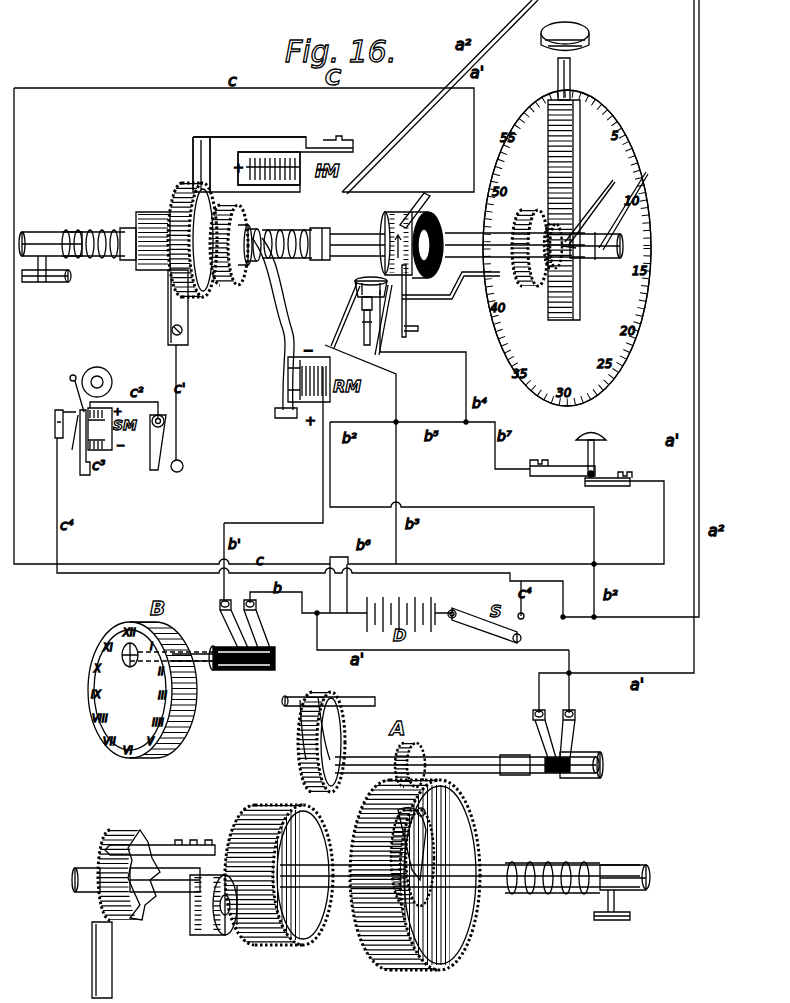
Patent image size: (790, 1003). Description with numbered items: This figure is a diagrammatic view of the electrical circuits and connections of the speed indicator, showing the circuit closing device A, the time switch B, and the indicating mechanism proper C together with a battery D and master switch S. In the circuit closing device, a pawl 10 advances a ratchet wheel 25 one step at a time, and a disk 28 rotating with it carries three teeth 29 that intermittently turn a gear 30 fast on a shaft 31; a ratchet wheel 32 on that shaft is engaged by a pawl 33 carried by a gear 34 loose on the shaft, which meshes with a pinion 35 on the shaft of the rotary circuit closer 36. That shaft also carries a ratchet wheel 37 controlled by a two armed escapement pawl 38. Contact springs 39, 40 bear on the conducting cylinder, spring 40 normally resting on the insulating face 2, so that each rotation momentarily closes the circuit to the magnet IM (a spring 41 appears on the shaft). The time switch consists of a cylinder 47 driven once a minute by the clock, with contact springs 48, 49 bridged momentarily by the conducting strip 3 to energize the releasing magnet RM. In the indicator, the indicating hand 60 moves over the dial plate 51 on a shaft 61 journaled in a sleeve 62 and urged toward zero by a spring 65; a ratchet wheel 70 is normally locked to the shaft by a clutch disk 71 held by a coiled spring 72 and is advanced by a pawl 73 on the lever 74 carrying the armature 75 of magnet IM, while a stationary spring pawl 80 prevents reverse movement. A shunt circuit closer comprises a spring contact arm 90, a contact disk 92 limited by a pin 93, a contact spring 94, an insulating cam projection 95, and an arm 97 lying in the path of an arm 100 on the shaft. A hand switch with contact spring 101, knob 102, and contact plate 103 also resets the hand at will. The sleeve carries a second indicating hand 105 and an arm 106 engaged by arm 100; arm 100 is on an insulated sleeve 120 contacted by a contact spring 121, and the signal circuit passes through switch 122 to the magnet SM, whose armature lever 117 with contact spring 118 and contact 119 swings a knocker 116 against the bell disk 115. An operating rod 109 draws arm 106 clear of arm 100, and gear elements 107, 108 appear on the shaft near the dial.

The insulating material 2 is at (553, 780).
The strip of conducting material 3 is at (277, 660).
The pawl 10 is at (92, 970).
The ratchet wheel 25 is at (96, 882).
The disk or wheel 28 is at (215, 932).
The teeth 29 is at (238, 930).
The gear 30 is at (258, 808).
The shaft 31 is at (634, 872).
The ratchet wheel 32 is at (430, 905).
The pawl 33 is at (412, 832).
The gear 34 is at (478, 842).
The pinion 35 is at (430, 740).
The rotary circuit closer 36 is at (526, 775).
The ratchet wheel 37 is at (298, 776).
The two armed escapement pawl 38 is at (300, 735).
The contact spring 39 is at (534, 716).
The contact spring 40 is at (566, 737).
The spring 41 is at (568, 896).
The cylinder or barrel 47 is at (258, 671).
The contact spring 48 is at (262, 623).
The contact spring 49 is at (222, 610).
The dial plate 51 is at (567, 248).
The indicating hand 60 is at (620, 218).
The shaft 61 is at (70, 232).
The sleeve 62 is at (548, 272).
The spring 65 is at (100, 232).
The ratchet wheel 70 is at (174, 212).
The clutch disk 71 is at (228, 222).
The coiled spring 72 is at (294, 230).
The pawl 73 is at (193, 166).
The lever 74 is at (240, 140).
The armature 75 is at (293, 142).
The stationary spring pawl 80 is at (168, 312).
The spring contact arm 90 is at (380, 330).
The contact disk 92 is at (355, 289).
The pin 93 is at (360, 318).
The contact spring 94 is at (334, 328).
The cam projection 95 is at (386, 280).
The arm 97 is at (418, 330).
The arm 100 is at (406, 312).
The contact spring 101 is at (572, 472).
The knob 102 is at (594, 445).
The contact plate 103 is at (596, 484).
The second indicating hand 105 is at (606, 185).
The arm or finger 106 is at (445, 300).
The gear 107 is at (524, 224).
The worm screw 108 is at (570, 146).
The operating rod 109 is at (572, 80).
The disk 115 is at (100, 372).
The knocker 116 is at (70, 378).
The armature lever 117 is at (83, 474).
The contact spring 118 is at (77, 442).
The contact 119 is at (62, 412).
The sleeve 120 is at (385, 225).
The contact spring 121 is at (407, 203).
The switch 122 is at (153, 468).